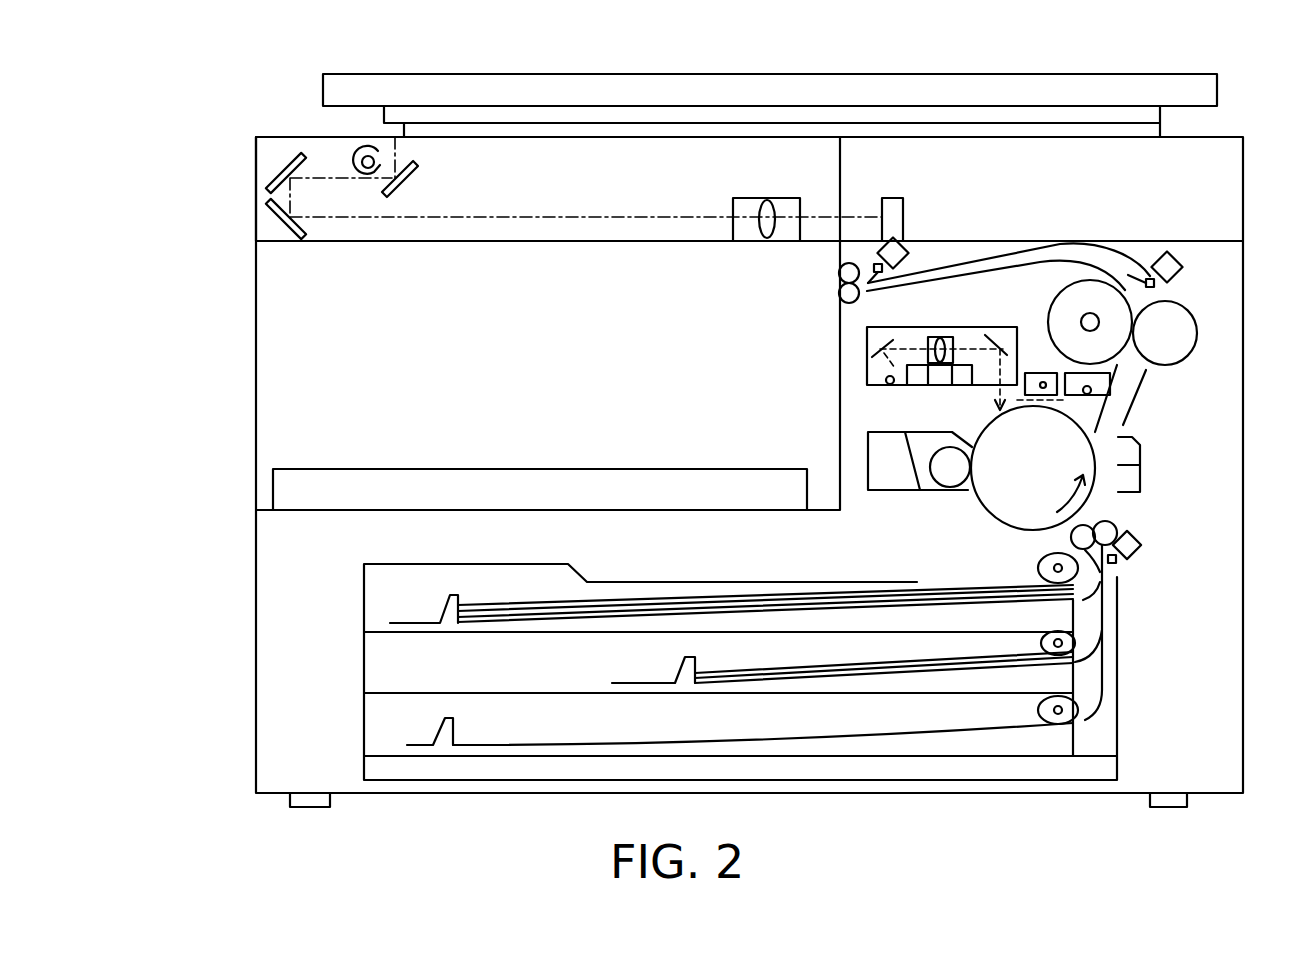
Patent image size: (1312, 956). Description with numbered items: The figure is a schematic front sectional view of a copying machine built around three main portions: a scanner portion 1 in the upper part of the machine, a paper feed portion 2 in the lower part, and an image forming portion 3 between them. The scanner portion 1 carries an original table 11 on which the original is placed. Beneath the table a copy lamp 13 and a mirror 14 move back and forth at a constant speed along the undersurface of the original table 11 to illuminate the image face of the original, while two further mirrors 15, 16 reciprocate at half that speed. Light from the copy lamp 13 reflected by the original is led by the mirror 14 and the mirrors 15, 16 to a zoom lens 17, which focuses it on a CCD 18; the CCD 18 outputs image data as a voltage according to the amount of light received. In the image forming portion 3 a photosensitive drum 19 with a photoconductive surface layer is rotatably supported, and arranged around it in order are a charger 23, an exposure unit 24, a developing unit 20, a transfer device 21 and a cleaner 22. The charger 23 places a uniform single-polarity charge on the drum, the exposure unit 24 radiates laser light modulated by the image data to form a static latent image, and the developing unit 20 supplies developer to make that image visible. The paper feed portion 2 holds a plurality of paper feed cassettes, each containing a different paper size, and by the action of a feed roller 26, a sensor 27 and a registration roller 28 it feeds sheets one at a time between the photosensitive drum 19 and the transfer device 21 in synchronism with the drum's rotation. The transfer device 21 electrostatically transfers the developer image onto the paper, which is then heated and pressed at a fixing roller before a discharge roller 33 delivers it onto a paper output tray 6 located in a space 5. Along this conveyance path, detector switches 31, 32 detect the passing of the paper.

The scanner portion 1 is at (242, 198).
The paper feed portion 2 is at (272, 575).
The image forming portion 3 is at (1240, 323).
The space 5 is at (265, 368).
The paper output tray 6 is at (420, 469).
The original table 11 is at (817, 122).
The copy lamp 13 is at (356, 150).
The mirror 14 is at (412, 181).
The mirror 15 is at (282, 163).
The mirror 16 is at (280, 223).
The zoom lens 17 is at (745, 198).
The photoelectric transducer (CCD) 18 is at (893, 198).
The photosensitive drum 19 is at (985, 502).
The developing unit 20 is at (888, 490).
The transfer device 21 is at (1140, 478).
The cleaner 22 is at (1100, 384).
The charger 23 is at (1060, 396).
The exposure unit 24 is at (867, 355).
The feed roller 26 is at (1038, 568).
The sensor 27 is at (1130, 560).
The registration roller 28 is at (1112, 527).
The detector switch 31 is at (1172, 252).
The detector switch 32 is at (906, 242).
The discharge roller 33 is at (838, 272).